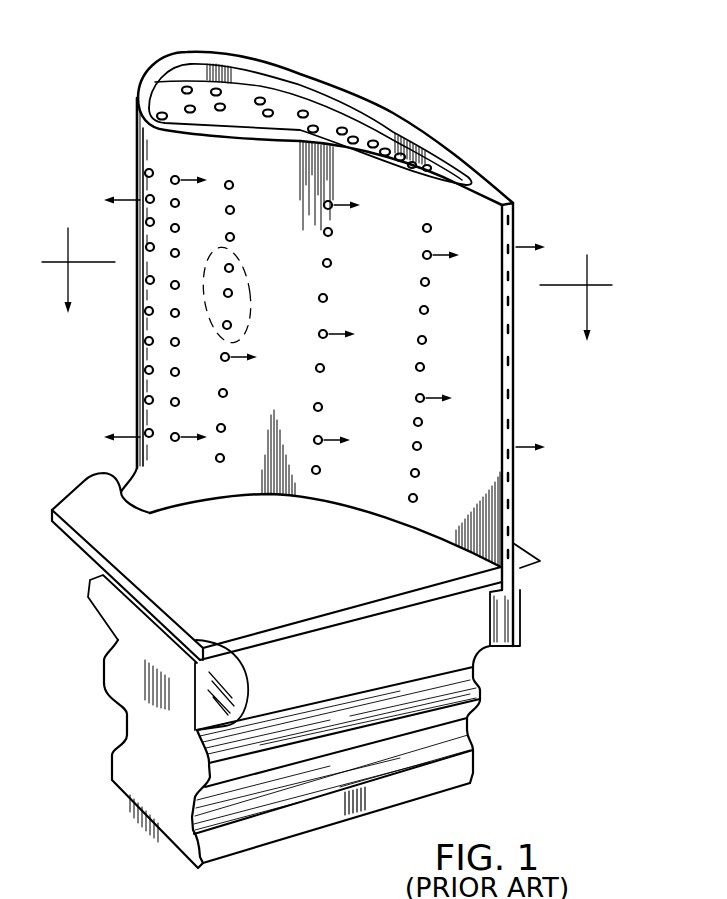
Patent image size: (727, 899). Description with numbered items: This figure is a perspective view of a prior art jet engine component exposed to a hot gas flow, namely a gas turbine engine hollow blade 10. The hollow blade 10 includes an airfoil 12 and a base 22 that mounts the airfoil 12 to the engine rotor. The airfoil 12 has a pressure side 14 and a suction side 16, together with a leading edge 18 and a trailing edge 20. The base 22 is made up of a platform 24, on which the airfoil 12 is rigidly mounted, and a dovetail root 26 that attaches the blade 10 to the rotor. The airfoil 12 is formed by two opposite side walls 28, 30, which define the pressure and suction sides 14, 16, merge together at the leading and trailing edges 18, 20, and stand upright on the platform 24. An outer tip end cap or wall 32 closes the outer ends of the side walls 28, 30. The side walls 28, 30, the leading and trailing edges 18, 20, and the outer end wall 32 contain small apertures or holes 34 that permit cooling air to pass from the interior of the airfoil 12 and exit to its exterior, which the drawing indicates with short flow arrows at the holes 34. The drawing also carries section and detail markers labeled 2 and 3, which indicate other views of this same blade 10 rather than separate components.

The hollow blade 10 is at (518, 127).
The airfoil 12 is at (526, 428).
The pressure side 14 is at (470, 447).
The suction side 16 is at (447, 151).
The leading edge 18 is at (136, 152).
The trailing edge 20 is at (516, 403).
The base 22 is at (534, 628).
The platform 24 is at (265, 581).
The dovetail root 26 is at (468, 733).
The side wall 28 is at (297, 140).
The side wall 30 is at (393, 113).
The outer tip end cap or wall 32 is at (360, 133).
The apertures or holes 34 is at (187, 86).
The section line 2- 2 is at (328, 283).
The detail region 3 is at (228, 294).